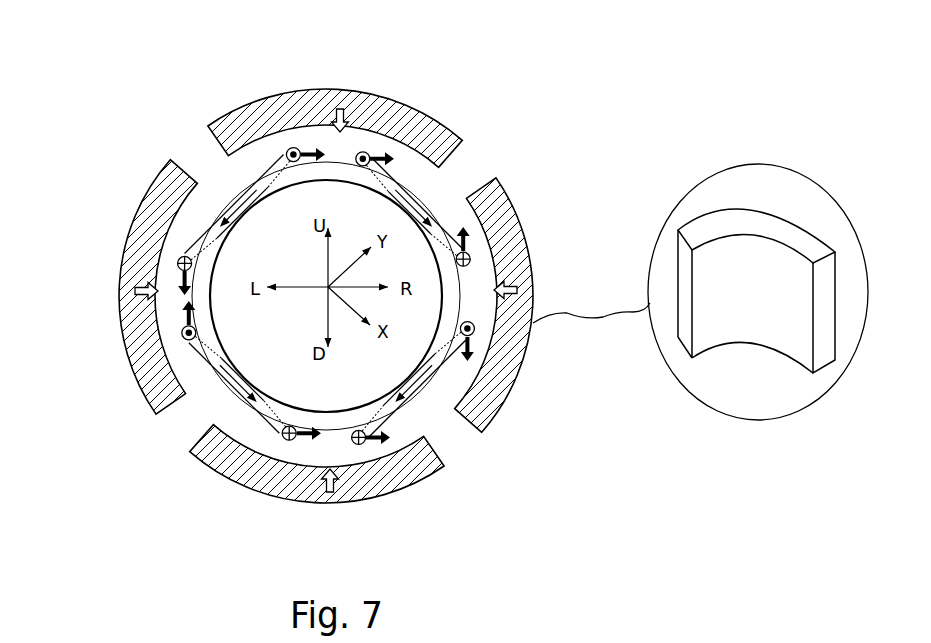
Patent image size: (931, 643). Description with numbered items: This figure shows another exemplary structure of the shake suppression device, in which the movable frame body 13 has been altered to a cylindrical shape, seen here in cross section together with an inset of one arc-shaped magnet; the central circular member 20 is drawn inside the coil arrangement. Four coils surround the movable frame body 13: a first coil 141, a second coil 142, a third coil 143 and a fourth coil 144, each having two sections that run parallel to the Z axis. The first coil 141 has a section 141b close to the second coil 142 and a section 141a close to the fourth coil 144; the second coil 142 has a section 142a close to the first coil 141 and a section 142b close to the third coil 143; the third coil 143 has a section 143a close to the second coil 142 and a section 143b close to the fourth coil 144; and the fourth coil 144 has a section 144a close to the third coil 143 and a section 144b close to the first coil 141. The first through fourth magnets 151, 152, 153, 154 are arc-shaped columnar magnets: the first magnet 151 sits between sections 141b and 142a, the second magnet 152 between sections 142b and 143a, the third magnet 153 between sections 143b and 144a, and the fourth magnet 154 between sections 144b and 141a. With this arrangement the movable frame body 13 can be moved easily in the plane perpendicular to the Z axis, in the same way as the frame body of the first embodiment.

The movable frame body 13 is at (452, 288).
The movable body 20 is at (338, 207).
The first coil 141 is at (422, 395).
The section of the first coil 141a is at (362, 446).
The section of the first coil 141b is at (473, 335).
The second coil 142 is at (425, 197).
The section of the second coil 142a is at (468, 254).
The section of the second coil 142b is at (370, 155).
The third coil 143 is at (222, 210).
The section of the third coil 143a is at (288, 150).
The section of the third coil 143b is at (180, 258).
The fourth coil 144 is at (220, 380).
The section of the fourth coil 144a is at (183, 340).
The section of the fourth coil 144b is at (284, 440).
The first magnet 151 is at (530, 305).
The second magnet 152 is at (271, 98).
The third magnet 153 is at (130, 257).
The fourth magnet 154 is at (270, 497).